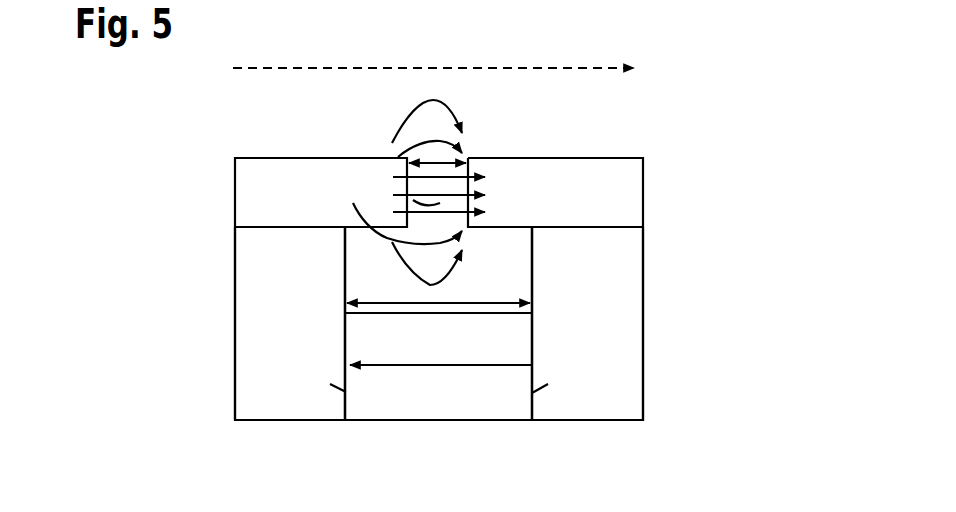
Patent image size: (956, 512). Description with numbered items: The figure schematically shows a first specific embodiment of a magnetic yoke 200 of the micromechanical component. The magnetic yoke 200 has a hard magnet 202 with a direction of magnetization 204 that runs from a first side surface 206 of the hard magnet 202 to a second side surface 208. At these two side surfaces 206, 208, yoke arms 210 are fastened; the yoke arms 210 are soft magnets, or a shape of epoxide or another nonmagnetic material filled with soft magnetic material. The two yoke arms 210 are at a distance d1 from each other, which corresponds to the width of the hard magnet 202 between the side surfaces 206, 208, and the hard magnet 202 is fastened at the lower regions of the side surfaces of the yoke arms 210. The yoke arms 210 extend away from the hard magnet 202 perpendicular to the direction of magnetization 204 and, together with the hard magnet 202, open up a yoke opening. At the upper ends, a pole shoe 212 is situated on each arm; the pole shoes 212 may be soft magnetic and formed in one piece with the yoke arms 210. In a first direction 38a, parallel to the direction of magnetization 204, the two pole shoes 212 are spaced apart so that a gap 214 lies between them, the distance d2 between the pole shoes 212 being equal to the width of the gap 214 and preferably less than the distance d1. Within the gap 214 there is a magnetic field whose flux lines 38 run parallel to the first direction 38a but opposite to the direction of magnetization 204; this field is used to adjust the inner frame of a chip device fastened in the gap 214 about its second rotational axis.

The magnetic yoke 200 is at (712, 118).
The hard magnet 202 is at (497, 398).
The direction of magnetization 204 is at (442, 365).
The first side surface 206 is at (532, 393).
The second side surface 208 is at (346, 392).
The yoke arms 210 is at (263, 368).
The pole shoes 212 is at (275, 172).
The gap 214 is at (437, 230).
The flux lines 38 is at (407, 198).
The first direction 38a is at (552, 70).
The distance between yoke arms d1 is at (452, 303).
The distance between pole shoes d2 is at (431, 162).